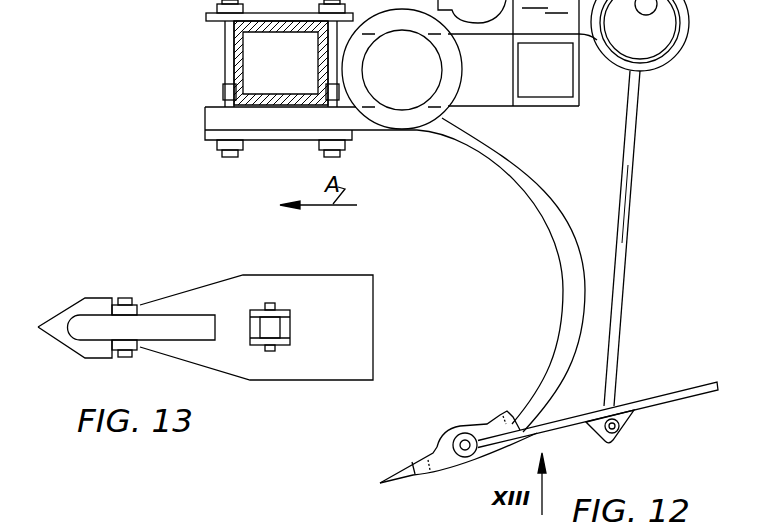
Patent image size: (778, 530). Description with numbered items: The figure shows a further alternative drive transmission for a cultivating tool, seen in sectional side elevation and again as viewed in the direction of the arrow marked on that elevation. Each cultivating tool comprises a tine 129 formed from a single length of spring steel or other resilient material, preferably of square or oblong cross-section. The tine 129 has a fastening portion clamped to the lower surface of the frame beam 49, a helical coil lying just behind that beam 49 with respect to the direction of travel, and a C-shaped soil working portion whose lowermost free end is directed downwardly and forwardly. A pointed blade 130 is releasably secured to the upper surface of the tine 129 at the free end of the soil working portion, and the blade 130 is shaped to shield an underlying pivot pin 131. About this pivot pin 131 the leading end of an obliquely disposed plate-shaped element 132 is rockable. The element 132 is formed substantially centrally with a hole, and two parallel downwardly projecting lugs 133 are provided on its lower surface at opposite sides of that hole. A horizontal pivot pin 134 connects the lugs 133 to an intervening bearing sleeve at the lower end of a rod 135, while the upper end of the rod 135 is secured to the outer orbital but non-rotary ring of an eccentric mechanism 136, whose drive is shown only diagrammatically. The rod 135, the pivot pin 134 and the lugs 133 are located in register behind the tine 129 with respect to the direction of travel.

In FIG. 12, the frame beam 49 is at (237, 62).
In FIG. 12, the tine 129 is at (548, 228).
In FIG. 13, the tine 129 is at (190, 336).
In FIG. 12, the pointed blade 130 is at (408, 463).
In FIG. 13, the pointed blade 130 is at (84, 301).
In FIG. 12, the pivot pin 131 is at (460, 432).
In FIG. 13, the pivot pin 131 is at (127, 297).
In FIG. 12, the plate-shaped element 132 is at (671, 393).
In FIG. 13, the plate-shaped element 132 is at (280, 258).
In FIG. 12, the lugs 133 is at (650, 410).
In FIG. 13, the lugs 133 is at (290, 315).
In FIG. 12, the horizontal pivot pin 134 is at (608, 438).
In FIG. 13, the horizontal pivot pin 134 is at (272, 352).
In FIG. 12, the rod 135 is at (622, 263).
In FIG. 12, the eccentric mechanism 136 is at (687, 44).